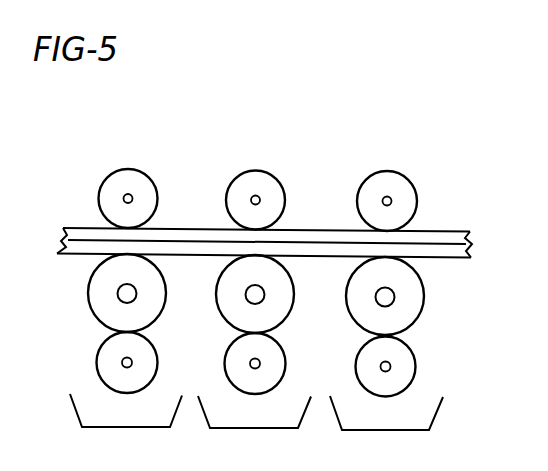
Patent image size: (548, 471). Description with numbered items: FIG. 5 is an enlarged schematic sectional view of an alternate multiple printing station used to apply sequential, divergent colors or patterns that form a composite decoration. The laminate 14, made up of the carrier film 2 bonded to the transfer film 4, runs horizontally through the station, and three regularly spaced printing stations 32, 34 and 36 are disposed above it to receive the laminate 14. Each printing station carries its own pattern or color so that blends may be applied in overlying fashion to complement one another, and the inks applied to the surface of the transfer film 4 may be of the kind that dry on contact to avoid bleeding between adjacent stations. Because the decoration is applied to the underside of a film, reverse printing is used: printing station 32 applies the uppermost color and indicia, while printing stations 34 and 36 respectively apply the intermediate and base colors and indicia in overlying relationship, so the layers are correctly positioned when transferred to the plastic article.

The carrier film 2 is at (447, 233).
The transfer film 4 is at (460, 255).
The laminate 14 is at (290, 240).
The printing station 32 is at (150, 170).
The printing station 34 is at (277, 175).
The printing station 36 is at (410, 175).